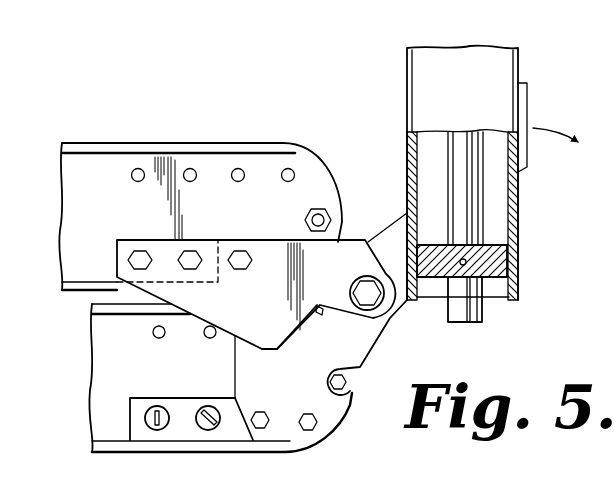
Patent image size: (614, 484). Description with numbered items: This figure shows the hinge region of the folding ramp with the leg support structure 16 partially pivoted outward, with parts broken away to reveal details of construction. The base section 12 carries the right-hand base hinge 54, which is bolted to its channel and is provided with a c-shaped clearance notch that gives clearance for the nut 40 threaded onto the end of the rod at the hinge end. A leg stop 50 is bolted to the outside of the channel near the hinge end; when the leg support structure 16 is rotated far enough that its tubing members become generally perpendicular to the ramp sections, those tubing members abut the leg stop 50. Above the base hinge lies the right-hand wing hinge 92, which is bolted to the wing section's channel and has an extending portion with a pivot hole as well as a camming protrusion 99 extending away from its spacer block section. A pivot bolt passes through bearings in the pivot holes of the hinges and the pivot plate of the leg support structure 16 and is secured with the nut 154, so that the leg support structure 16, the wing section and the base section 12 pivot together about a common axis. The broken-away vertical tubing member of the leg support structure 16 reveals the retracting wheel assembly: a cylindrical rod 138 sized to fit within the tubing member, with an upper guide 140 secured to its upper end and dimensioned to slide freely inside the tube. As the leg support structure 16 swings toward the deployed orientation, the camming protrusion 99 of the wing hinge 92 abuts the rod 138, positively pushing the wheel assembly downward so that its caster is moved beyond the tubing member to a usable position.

The base section 12 is at (112, 358).
The leg support structure 16 is at (523, 63).
The nut 40 is at (345, 384).
The leg stop 50 is at (176, 405).
The right-hand base hinge 54 is at (247, 387).
The right-hand wing hinge 92 is at (283, 240).
The camming protrusion 99 is at (280, 349).
The cylindrical rod 138 is at (482, 322).
The upper guide 140 is at (505, 264).
The nut 154 is at (365, 287).